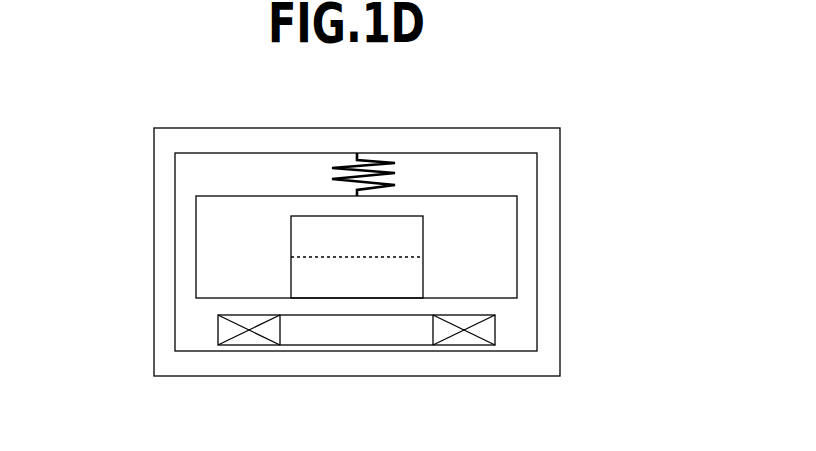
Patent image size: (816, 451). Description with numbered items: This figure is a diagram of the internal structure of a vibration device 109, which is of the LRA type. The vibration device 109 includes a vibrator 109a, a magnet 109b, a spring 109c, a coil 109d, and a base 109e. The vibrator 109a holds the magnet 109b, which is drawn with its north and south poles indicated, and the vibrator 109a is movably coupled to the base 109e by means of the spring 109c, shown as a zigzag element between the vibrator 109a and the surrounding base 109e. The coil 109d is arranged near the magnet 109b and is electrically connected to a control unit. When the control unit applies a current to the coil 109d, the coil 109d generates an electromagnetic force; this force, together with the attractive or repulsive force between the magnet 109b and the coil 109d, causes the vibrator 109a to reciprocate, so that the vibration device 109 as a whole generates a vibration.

The vibration device 109 is at (593, 130).
The vibrator 109a is at (213, 240).
The magnet 109b is at (425, 237).
The spring 109c is at (345, 160).
The coil 109d is at (491, 327).
The base 109e is at (154, 350).